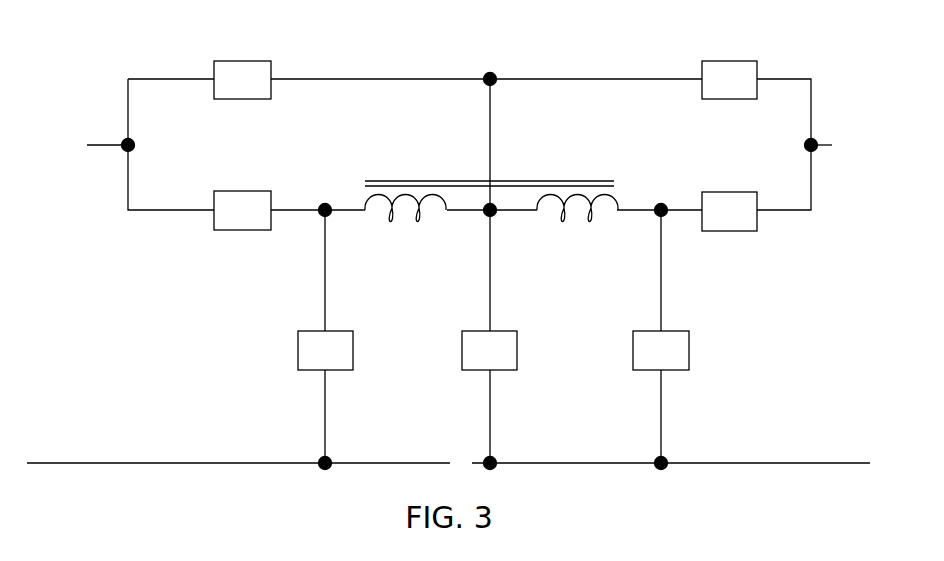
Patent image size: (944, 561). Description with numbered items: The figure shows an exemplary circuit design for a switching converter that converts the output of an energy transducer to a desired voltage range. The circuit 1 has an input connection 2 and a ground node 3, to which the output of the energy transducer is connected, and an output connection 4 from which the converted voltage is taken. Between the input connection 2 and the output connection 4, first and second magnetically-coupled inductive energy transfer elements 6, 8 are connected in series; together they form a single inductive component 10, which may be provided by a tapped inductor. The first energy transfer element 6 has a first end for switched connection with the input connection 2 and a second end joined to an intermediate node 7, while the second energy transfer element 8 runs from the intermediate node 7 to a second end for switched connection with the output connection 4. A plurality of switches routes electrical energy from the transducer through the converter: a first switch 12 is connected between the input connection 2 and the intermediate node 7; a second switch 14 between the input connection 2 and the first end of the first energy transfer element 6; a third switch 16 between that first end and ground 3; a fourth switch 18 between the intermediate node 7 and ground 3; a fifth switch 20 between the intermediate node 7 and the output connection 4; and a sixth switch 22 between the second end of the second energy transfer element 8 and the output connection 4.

The circuit 1 is at (83, 57).
The input connection 2 is at (28, 145).
The ground node 3 is at (448, 465).
The output connection 4 is at (875, 145).
The first energy transfer element 6 is at (405, 221).
The intermediate node 7 is at (497, 226).
The second energy transfer element 8 is at (577, 221).
The inductive component 10 is at (489, 165).
The first switch 12 is at (242, 80).
The second switch 14 is at (242, 210).
The third switch 16 is at (493, 350).
The fourth switch 18 is at (489, 350).
The fifth switch 20 is at (729, 80).
The sixth switch 22 is at (729, 211).